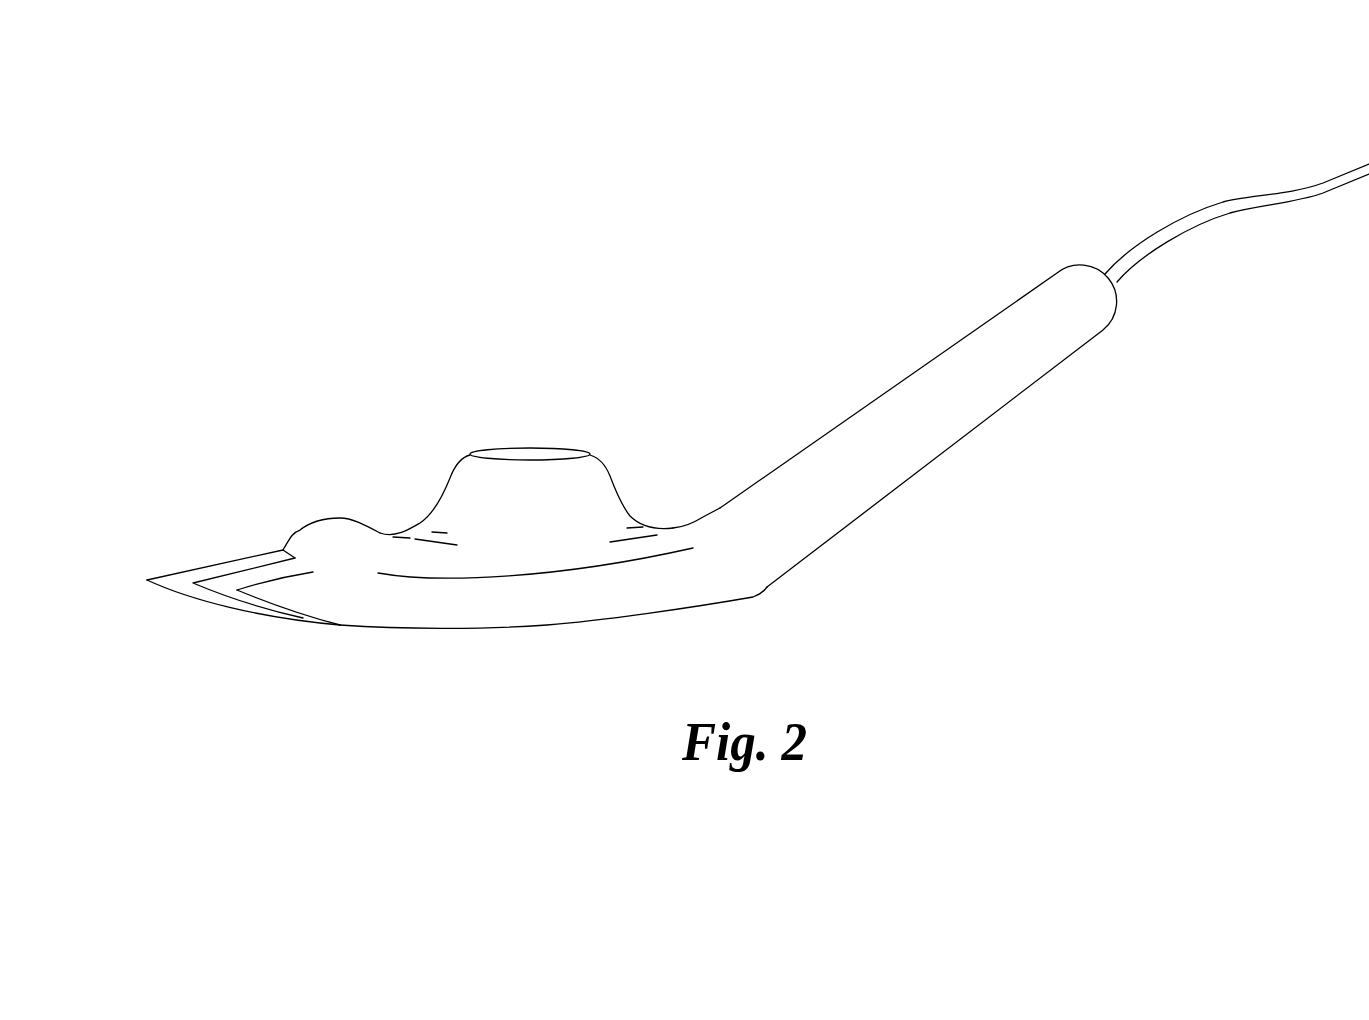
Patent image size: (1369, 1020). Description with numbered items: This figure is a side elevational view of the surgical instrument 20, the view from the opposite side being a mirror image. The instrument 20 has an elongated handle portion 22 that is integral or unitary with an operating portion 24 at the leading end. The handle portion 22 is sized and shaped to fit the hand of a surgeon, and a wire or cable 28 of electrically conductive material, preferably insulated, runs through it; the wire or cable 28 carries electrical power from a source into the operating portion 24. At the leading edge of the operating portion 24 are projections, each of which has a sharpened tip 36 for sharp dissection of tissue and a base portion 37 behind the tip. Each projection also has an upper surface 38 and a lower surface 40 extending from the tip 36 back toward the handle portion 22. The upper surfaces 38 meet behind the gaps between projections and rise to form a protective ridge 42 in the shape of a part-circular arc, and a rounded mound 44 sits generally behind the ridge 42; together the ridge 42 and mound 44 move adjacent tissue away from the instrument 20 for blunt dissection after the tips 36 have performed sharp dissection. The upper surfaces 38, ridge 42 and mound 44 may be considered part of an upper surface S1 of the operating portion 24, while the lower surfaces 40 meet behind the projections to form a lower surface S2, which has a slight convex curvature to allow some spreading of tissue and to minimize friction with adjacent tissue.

The instrument 20 is at (203, 317).
The handle portion 22 is at (966, 235).
The operating portion 24 is at (603, 658).
The wire or cable 28 is at (1200, 212).
The tip 36 is at (150, 580).
The base portion 37 is at (295, 597).
The upper surface 38 is at (173, 575).
The lower surface 40 is at (187, 602).
The protective ridge 42 is at (330, 537).
The rounded mound 44 is at (520, 473).
The upper surface S1 is at (427, 512).
The lower surface S2 is at (480, 628).